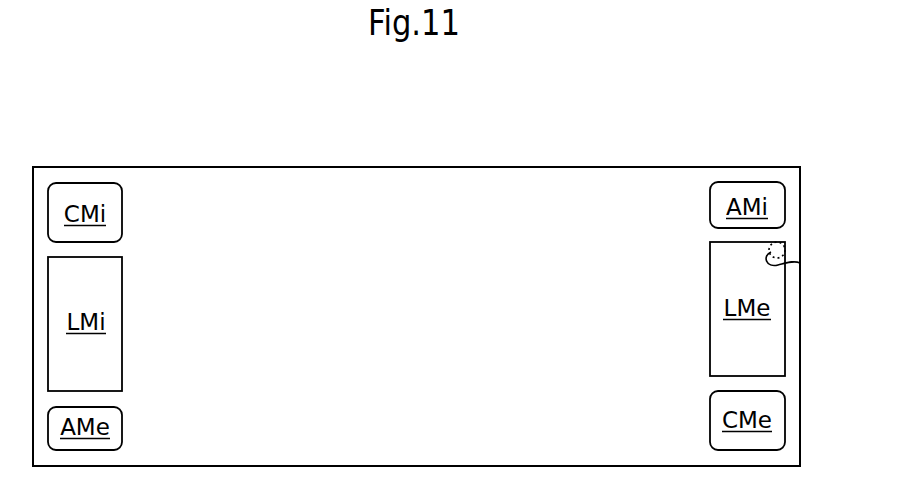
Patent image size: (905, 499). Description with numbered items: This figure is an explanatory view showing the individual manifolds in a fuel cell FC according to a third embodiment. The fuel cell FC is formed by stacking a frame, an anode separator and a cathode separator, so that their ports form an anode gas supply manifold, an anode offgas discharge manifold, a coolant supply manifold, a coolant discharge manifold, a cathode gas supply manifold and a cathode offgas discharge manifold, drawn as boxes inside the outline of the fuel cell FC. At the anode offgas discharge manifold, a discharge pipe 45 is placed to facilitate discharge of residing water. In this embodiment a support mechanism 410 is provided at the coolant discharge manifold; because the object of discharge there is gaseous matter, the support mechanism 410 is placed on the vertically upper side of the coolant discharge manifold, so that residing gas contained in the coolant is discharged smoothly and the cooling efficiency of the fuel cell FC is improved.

The fuel cell FC is at (490, 148).
The discharge pipe 45 is at (784, 243).
The support mechanism 410 is at (800, 263).